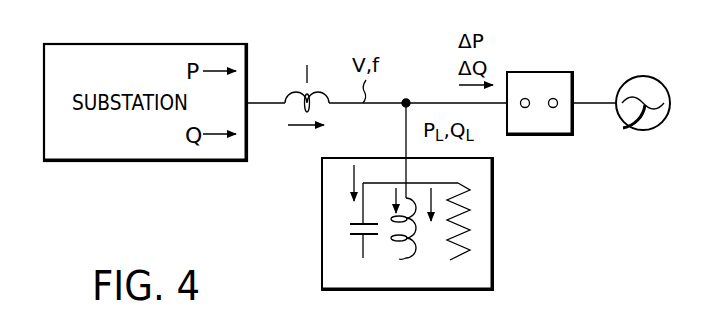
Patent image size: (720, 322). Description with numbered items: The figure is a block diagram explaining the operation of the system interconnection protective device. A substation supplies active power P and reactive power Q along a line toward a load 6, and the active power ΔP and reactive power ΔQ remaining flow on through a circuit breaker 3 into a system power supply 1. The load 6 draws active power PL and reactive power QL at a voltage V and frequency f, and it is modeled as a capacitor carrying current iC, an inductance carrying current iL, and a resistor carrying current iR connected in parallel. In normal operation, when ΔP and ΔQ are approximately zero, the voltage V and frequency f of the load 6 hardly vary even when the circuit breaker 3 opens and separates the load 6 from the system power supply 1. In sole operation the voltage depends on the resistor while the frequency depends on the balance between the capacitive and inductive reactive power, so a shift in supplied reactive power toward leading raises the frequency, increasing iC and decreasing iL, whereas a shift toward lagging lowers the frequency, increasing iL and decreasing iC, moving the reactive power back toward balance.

The system power supply 1 is at (644, 80).
The circuit breaker 3 is at (552, 75).
The load 6 is at (493, 218).